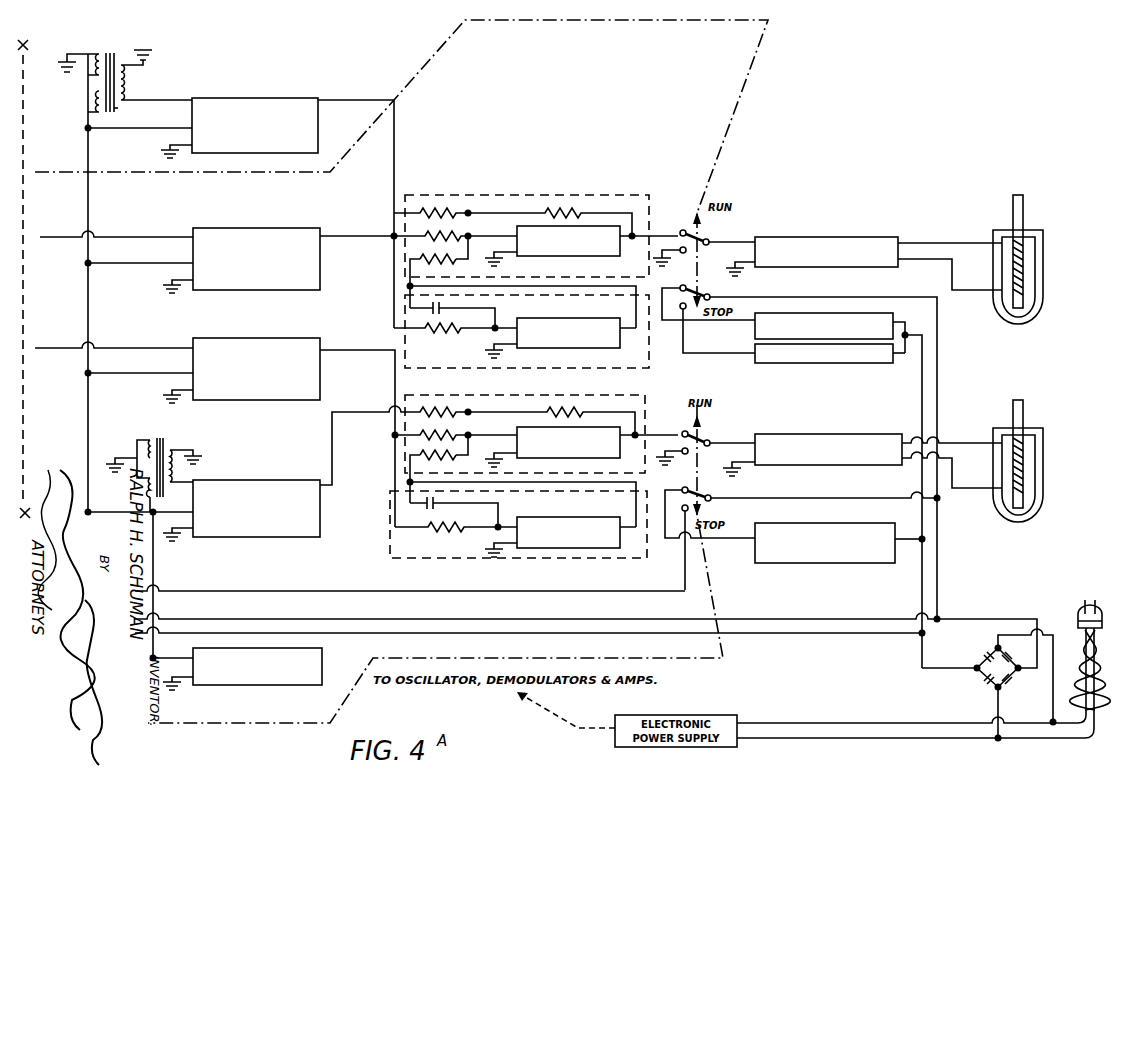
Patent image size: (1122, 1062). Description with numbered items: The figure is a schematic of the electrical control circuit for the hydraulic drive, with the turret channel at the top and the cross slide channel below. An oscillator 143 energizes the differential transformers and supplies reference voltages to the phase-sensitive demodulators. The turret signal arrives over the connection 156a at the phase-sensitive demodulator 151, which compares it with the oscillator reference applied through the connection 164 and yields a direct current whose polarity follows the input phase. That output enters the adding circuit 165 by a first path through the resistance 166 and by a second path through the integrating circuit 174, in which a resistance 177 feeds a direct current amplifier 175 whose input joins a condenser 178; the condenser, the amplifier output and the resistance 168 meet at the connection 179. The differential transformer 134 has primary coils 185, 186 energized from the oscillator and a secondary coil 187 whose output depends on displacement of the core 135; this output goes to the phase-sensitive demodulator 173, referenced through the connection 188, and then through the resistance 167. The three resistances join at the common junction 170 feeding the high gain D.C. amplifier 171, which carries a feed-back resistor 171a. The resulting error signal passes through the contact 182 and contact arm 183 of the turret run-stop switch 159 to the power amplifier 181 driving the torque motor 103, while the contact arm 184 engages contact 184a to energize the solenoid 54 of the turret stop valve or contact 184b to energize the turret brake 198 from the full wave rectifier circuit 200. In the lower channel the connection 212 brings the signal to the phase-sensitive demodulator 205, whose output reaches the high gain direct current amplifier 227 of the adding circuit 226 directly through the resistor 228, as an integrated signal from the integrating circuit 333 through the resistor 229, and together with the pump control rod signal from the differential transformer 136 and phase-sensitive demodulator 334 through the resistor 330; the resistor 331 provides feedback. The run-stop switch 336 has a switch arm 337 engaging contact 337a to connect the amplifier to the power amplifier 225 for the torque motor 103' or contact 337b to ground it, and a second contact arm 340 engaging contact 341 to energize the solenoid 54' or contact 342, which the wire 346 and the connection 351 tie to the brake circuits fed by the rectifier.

The differential transformer 134 is at (126, 54).
The primary coil 185 is at (97, 56).
The primary coil 186 is at (96, 105).
The secondary coil 187 is at (128, 92).
The core 135 is at (116, 108).
The connection 188 is at (108, 130).
The phase-sensitive demodulator 173 is at (315, 98).
The connection 156a is at (75, 237).
The connection 164 is at (108, 263).
The phase-sensitive demodulator 151 is at (275, 228).
The connection 212 is at (72, 348).
The phase-sensitive demodulator 205 is at (310, 338).
The differential transformer 136 is at (151, 432).
The phase-sensitive demodulator 334 is at (275, 480).
The adding circuit 165 is at (523, 195).
The resistance 167 is at (443, 208).
The feed-back resistor 171a is at (568, 212).
The resistance 166 is at (420, 235).
The common junction 170 is at (470, 238).
The high gain D.C. amplifier 171 is at (517, 229).
The resistance 168 is at (420, 259).
The connection 179 is at (408, 286).
The integrating circuit 174 is at (553, 368).
The condenser 178 is at (443, 306).
The resistance 177 is at (441, 330).
The direct current amplifier 175 is at (592, 320).
The contact 182 is at (681, 231).
The contact arm 183 is at (692, 257).
The turret run-stop switch 159 is at (708, 239).
The power amplifier 181 is at (868, 226).
The contact 184a is at (686, 278).
The contact 184b is at (681, 309).
The contact arm 184 is at (710, 296).
The solenoid 54 is at (839, 484).
The turret brake 198 is at (862, 363).
The torque motor 103 is at (1038, 259).
The resistor 330 is at (449, 406).
The resistor 331 is at (585, 384).
The adding circuit 226 is at (627, 395).
The resistor 228 is at (455, 433).
The resistor 229 is at (420, 456).
The high gain direct current amplifier 227 is at (590, 458).
The integrating circuit 333 is at (390, 548).
The contact 341 is at (668, 491).
The contact 337a is at (684, 431).
The contact 337b is at (686, 460).
The switch arm 337 is at (719, 454).
The run-stop switch 336 is at (709, 427).
The power amplifier 225 is at (820, 434).
The second contact arm 340 is at (712, 494).
The contact 342 is at (689, 508).
The solenoid 54' is at (838, 554).
The torque motor 103' is at (1049, 461).
The wire 346 is at (212, 591).
The connection 351 is at (355, 619).
The oscillator 143 is at (259, 685).
The full wave rectifier circuit 200 is at (992, 652).